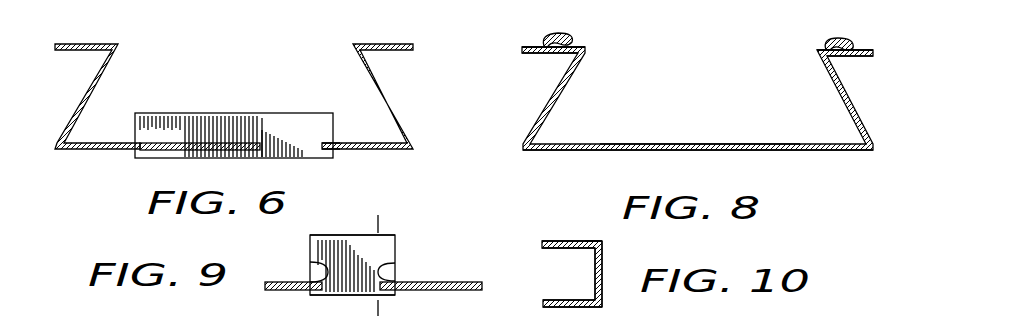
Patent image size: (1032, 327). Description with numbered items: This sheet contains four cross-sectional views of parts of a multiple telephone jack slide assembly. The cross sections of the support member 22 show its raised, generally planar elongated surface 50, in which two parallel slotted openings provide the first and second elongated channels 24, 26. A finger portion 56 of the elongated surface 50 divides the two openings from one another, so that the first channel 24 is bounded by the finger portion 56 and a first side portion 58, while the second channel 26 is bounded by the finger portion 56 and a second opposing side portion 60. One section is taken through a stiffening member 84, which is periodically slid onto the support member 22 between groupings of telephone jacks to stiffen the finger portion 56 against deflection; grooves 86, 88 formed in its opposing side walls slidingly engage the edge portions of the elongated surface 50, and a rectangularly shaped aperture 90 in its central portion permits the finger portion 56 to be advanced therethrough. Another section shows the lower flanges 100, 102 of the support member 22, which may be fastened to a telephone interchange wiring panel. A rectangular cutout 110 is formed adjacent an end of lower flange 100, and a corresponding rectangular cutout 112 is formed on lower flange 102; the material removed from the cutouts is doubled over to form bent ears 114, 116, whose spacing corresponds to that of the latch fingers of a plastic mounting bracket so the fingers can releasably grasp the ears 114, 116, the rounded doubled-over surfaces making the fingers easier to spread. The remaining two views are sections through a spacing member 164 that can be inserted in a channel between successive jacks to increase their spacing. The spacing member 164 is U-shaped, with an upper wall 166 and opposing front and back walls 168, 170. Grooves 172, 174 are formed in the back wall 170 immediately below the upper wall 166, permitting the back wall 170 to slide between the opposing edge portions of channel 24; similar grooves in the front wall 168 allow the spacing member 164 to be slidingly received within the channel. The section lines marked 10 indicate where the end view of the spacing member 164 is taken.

In FIG. 9, the section line 10 is at (356, 225).
In FIG. 8, the support member 22 is at (888, 128).
In FIG. 8, the first elongated channel 24 is at (644, 134).
In FIG. 8, the second elongated channel 26 is at (775, 134).
In FIG. 6, the generally planar elongated surface 50 is at (342, 168).
In FIG. 6, the finger portion 56 is at (232, 128).
In FIG. 8, the finger portion 56 is at (700, 156).
In FIG. 9, the finger portion 56 is at (448, 293).
In FIG. 6, the first side portion 58 is at (112, 149).
In FIG. 8, the first side portion 58 is at (587, 156).
In FIG. 9, the first side portion 58 is at (278, 292).
In FIG. 6, the second opposing side portion 60 is at (383, 151).
In FIG. 8, the second opposing side portion 60 is at (837, 156).
In FIG. 6, the stiffening member 84 is at (187, 120).
In FIG. 6, the groove 86 is at (147, 140).
In FIG. 6, the groove 88 is at (318, 140).
In FIG. 6, the rectangularly shaped aperture 90 is at (255, 140).
In FIG. 8, the lower flange 100 is at (542, 20).
In FIG. 8, the lower flange 102 is at (860, 52).
In FIG. 8, the rectangular cutout 110 is at (535, 54).
In FIG. 8, the rectangular cutout 112 is at (865, 57).
In FIG. 8, the bent ear 114 is at (568, 33).
In FIG. 8, the bent ear 116 is at (834, 38).
In FIG. 9, the spacing member 164 is at (418, 248).
In FIG. 10, the spacing member 164 is at (610, 262).
In FIG. 9, the upper wall 166 is at (343, 296).
In FIG. 10, the upper wall 166 is at (603, 272).
In FIG. 10, the front wall 168 is at (550, 309).
In FIG. 9, the back wall 170 is at (333, 240).
In FIG. 10, the back wall 170 is at (557, 241).
In FIG. 9, the groove 172 is at (318, 262).
In FIG. 9, the groove 174 is at (393, 274).
In FIG. 10, the groove 174 is at (588, 241).